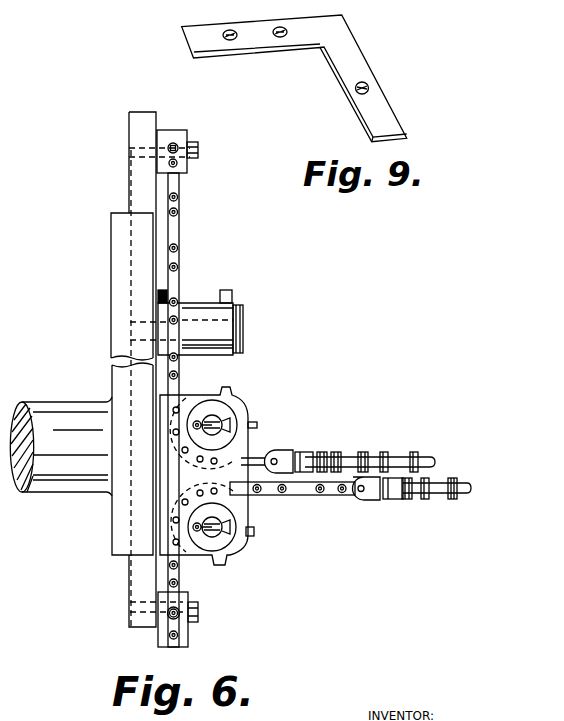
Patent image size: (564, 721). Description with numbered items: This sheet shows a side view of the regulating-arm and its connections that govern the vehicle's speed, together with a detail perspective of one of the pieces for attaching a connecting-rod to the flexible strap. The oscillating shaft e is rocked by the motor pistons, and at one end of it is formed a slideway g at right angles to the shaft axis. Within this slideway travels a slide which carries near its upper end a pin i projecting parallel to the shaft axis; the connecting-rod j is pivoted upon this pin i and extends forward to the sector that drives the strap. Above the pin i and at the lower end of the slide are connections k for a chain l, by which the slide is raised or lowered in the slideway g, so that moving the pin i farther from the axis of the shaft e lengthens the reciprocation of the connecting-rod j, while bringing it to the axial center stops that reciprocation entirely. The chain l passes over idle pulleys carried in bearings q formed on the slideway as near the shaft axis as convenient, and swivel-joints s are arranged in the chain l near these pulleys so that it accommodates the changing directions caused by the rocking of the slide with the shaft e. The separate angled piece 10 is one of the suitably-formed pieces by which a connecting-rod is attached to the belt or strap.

In FIG. 9, the suitably-formed piece 10 is at (294, 78).
In FIG. 6, the oscillating shaft e is at (50, 402).
In FIG. 6, the slideway g is at (115, 277).
In FIG. 6, the pin i is at (242, 330).
In FIG. 6, the connecting-rod j is at (226, 290).
In FIG. 6, the connections k is at (163, 135).
In FIG. 6, the chain l is at (178, 232).
In FIG. 6, the bearings q is at (250, 448).
In FIG. 6, the swivel-joints s is at (318, 452).